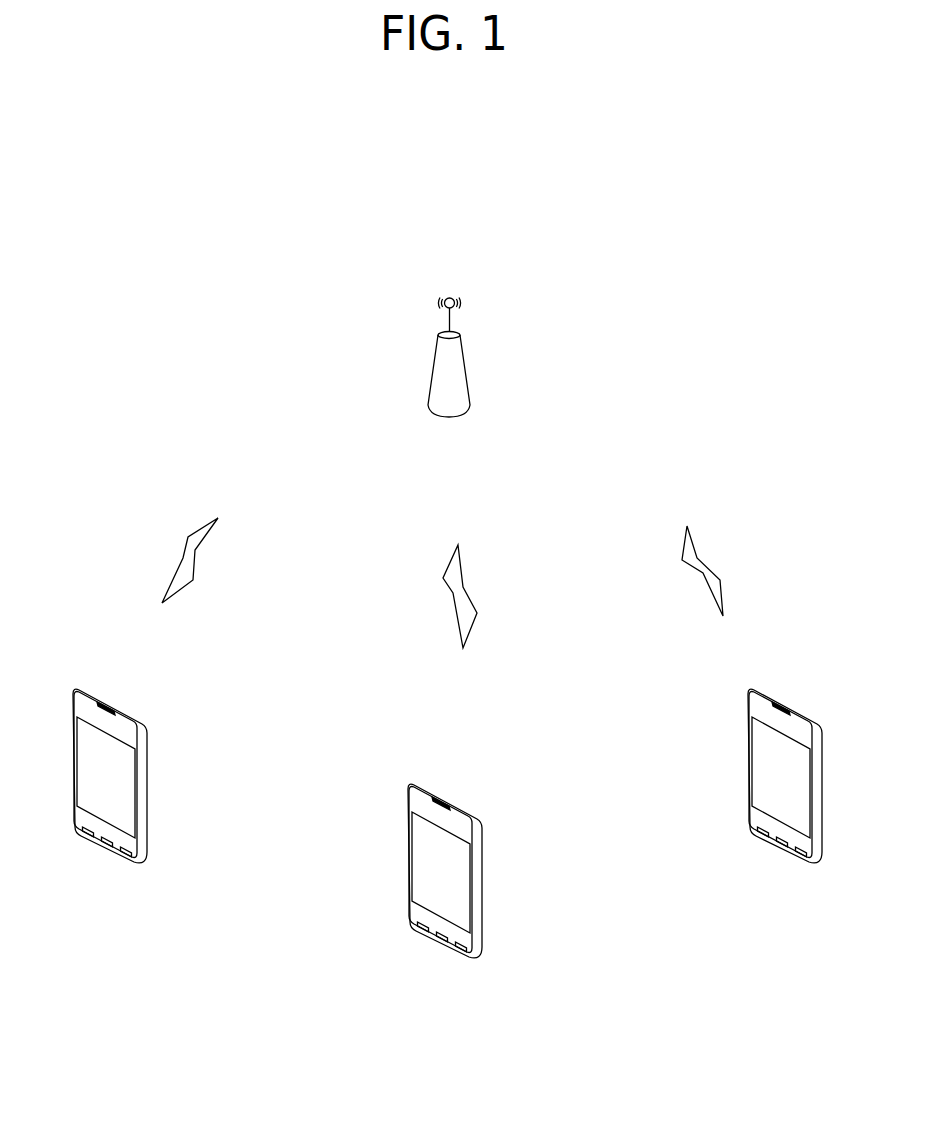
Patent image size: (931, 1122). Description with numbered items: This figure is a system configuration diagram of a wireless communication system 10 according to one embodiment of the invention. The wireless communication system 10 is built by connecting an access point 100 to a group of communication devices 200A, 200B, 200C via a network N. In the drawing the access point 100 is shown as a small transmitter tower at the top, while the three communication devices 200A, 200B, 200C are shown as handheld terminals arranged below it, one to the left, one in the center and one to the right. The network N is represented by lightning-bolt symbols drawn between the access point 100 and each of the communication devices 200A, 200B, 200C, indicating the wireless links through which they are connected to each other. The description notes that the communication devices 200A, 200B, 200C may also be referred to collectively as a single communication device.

The wireless communication system 10 is at (659, 285).
The access point 100 is at (451, 278).
The network N is at (713, 556).
The communication device 200A is at (103, 856).
The communication device 200B is at (442, 952).
The communication device 200C is at (778, 858).